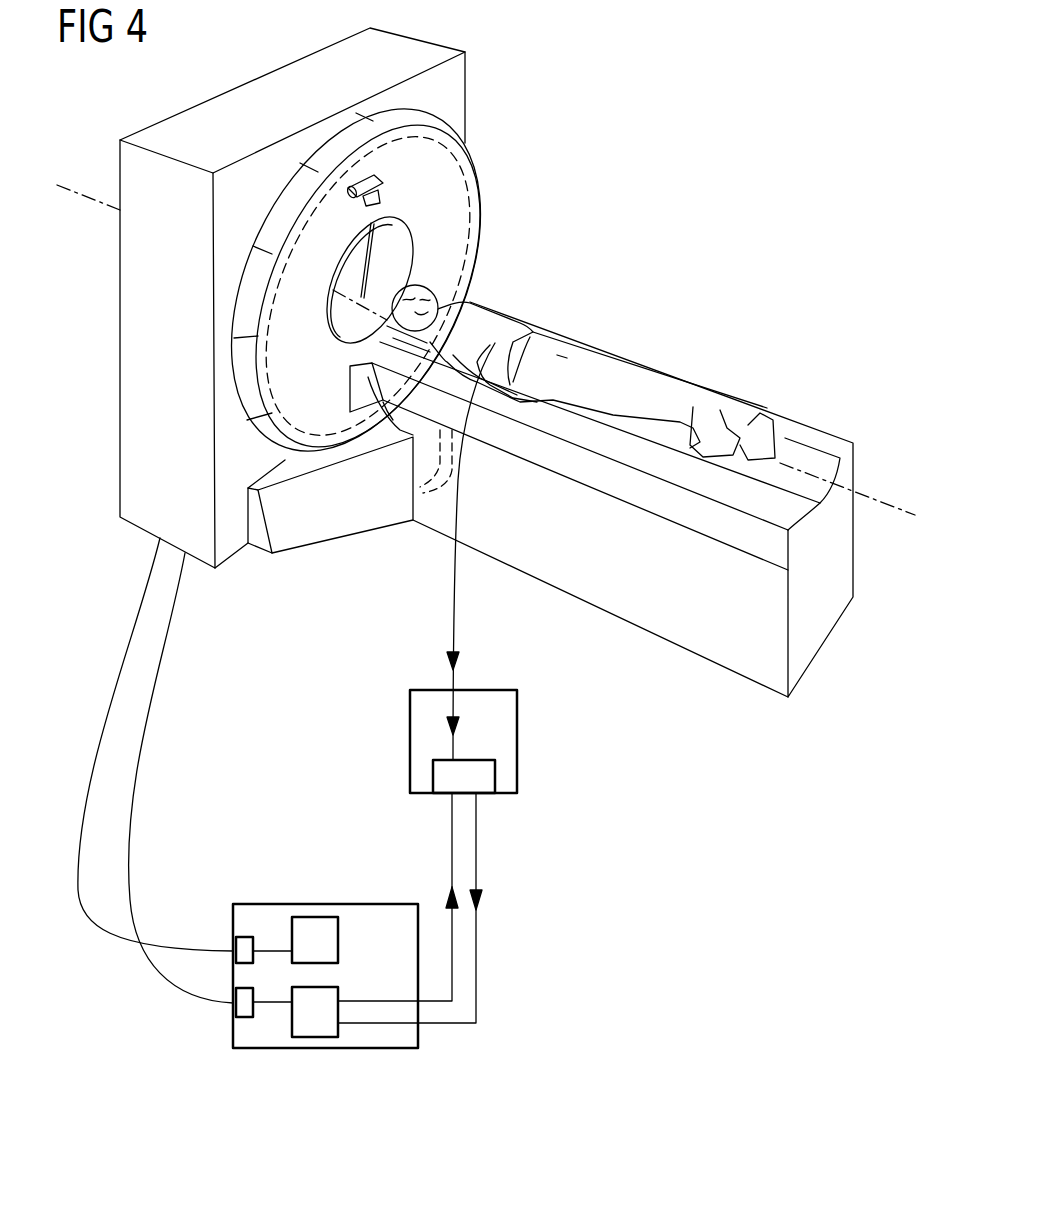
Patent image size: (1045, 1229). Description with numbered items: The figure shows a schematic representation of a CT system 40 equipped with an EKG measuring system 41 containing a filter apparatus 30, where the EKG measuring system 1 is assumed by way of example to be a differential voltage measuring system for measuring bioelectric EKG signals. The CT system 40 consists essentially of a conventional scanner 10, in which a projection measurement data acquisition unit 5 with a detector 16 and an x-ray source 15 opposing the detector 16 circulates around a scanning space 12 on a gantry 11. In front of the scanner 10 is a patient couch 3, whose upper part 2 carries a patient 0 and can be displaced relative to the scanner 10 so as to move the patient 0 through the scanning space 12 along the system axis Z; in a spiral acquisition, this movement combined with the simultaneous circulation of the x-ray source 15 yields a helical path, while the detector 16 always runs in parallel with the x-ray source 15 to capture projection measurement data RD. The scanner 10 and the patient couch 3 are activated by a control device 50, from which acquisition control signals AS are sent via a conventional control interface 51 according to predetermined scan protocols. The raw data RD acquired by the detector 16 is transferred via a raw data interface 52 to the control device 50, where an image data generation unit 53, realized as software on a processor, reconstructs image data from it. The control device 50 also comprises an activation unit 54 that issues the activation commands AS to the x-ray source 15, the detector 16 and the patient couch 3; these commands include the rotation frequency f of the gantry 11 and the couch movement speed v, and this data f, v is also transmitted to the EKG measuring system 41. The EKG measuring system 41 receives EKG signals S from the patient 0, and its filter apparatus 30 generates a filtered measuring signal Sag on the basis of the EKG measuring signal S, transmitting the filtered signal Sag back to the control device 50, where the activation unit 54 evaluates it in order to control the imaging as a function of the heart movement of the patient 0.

The CT system 40 is at (807, 125).
The EKG measuring system 1 is at (615, 245).
The scanner 10 is at (148, 518).
The gantry 11 is at (477, 212).
The scanning space 12 is at (362, 262).
The x-ray source 15 is at (386, 180).
The projection measurement data acquisition unit 5 is at (358, 162).
The detector 16 is at (358, 455).
The upper part 2 is at (768, 437).
The patient couch 3 is at (585, 590).
The system axis Z is at (878, 492).
The patient 0 is at (628, 370).
The acquisition control signals AS is at (130, 645).
The projection measurement data RD is at (160, 672).
The EKG measuring signal S is at (453, 620).
The EKG measuring system 41 is at (517, 733).
The filter apparatus 30 is at (482, 787).
The rotation frequency f is at (452, 840).
The couch movement speed v is at (452, 868).
The filtered measuring signal Sag is at (476, 872).
The control device 50 is at (370, 1048).
The image data generation unit 53 is at (332, 940).
The activation unit 54 is at (314, 1027).
The raw data interface 52 is at (240, 943).
The control interface 51 is at (240, 1007).